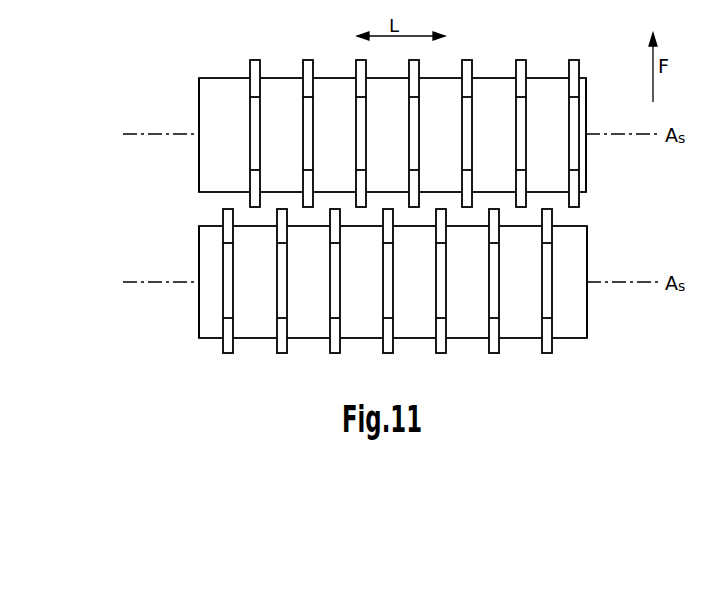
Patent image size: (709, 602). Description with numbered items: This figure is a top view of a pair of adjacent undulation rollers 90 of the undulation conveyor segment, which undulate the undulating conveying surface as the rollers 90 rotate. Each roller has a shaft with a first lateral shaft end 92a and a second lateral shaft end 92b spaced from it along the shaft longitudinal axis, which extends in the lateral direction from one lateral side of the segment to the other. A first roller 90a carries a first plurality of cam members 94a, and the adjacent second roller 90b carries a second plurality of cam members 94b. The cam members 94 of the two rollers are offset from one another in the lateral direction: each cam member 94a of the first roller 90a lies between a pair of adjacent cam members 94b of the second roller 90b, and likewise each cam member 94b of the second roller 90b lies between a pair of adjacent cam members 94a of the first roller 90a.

The undulation roller 90 is at (340, 206).
The second roller 90b is at (341, 108).
The first roller 90a is at (331, 305).
The first lateral shaft end 92a is at (199, 226).
The second lateral shaft end 92b is at (587, 182).
The cam member 94 is at (430, 108).
The second plurality of cam members 94b is at (470, 60).
The first plurality of cam members 94a is at (443, 353).